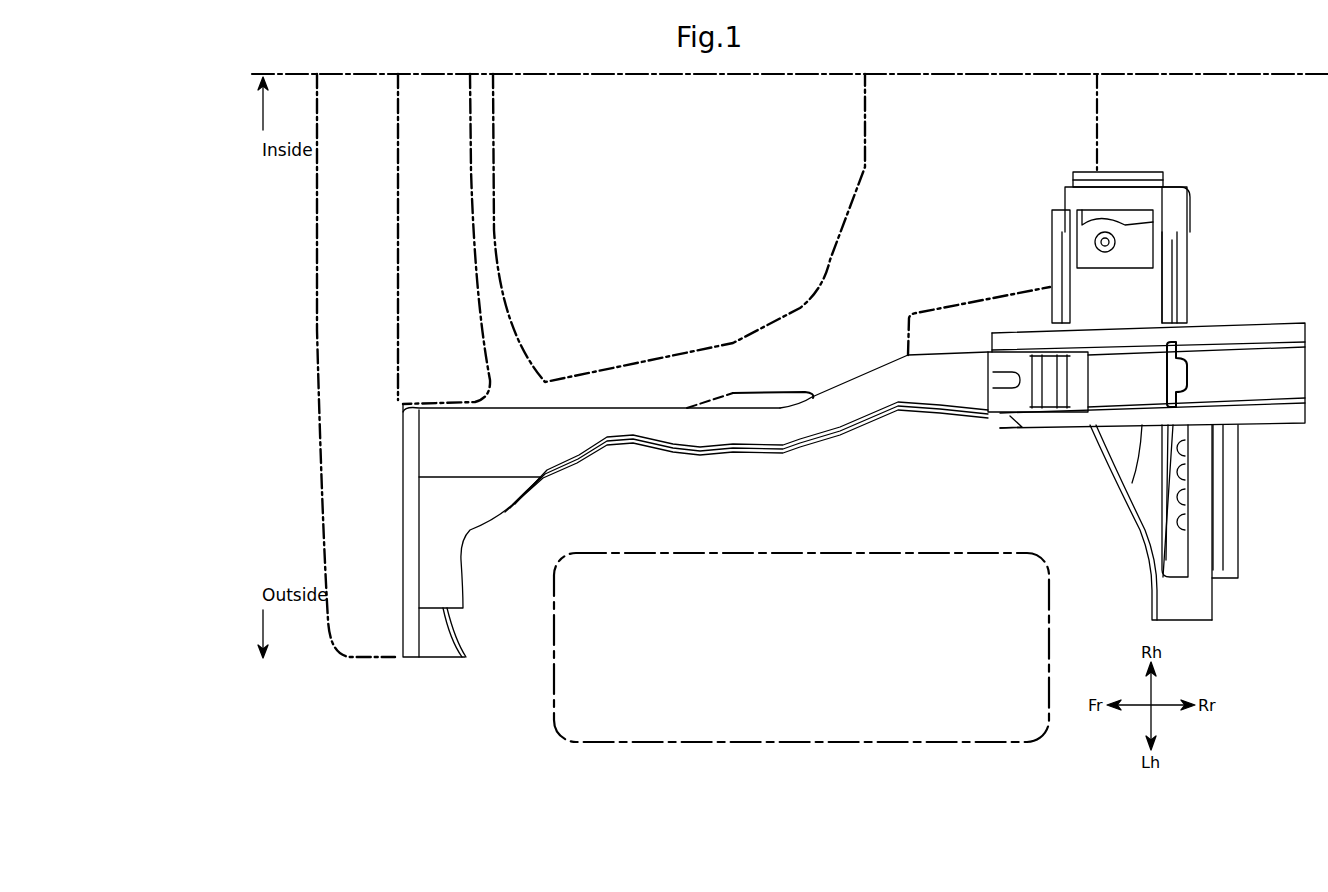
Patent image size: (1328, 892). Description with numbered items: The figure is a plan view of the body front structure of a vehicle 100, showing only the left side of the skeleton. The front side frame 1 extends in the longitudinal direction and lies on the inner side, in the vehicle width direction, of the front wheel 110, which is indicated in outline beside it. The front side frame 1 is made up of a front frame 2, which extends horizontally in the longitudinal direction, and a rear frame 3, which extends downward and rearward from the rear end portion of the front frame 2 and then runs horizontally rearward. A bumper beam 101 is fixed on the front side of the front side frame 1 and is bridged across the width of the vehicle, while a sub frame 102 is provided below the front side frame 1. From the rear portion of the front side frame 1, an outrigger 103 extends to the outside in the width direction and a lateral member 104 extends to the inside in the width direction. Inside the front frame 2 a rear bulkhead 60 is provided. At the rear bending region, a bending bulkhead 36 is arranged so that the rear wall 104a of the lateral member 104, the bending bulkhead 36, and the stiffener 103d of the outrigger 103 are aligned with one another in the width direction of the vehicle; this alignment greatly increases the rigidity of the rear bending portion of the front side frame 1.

The front side frame 1 is at (905, 471).
The front frame 2 is at (733, 432).
The rear frame 3 is at (1113, 380).
The bending bulkhead 36 is at (1182, 372).
The rear bulkhead 60 is at (1010, 393).
The vehicle 100 is at (405, 684).
The bumper beam 101 is at (317, 302).
The sub frame 102 is at (662, 354).
The outrigger 103 is at (1187, 522).
The stiffener 103d is at (1178, 513).
The lateral member 104 is at (1159, 247).
The rear wall 104a is at (1165, 297).
The front wheel 110 is at (554, 690).